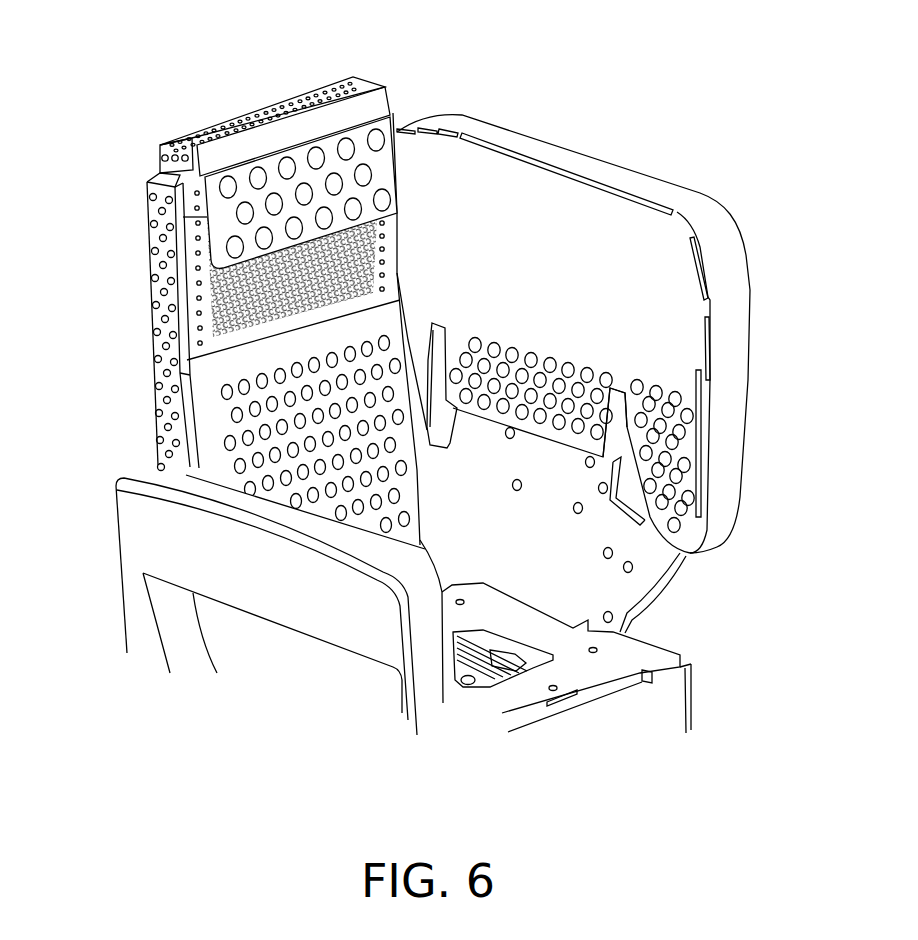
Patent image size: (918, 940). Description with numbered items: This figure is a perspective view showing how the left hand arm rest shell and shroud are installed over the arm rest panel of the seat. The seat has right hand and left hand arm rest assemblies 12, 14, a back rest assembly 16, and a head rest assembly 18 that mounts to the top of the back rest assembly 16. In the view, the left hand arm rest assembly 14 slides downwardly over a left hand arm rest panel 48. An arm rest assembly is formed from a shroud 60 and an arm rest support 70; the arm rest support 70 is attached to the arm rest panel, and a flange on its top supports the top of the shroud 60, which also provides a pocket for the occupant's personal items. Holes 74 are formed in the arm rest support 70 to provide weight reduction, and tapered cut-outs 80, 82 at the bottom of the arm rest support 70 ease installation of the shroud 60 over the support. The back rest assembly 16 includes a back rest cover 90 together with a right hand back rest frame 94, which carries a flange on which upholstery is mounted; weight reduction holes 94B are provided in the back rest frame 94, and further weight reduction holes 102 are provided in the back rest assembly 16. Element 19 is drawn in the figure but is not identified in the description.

The right hand arm rest assembly 12 is at (344, 411).
The left hand arm rest assembly 14 is at (624, 390).
The back rest assembly 16 is at (241, 329).
The head rest assembly 18 is at (335, 117).
The base plate 19 is at (687, 680).
The left hand arm rest panel 48 is at (625, 535).
The shroud 60 is at (157, 523).
The arm rest support 70 is at (626, 335).
The holes 74 is at (531, 243).
The tapered cut-out 80 is at (442, 322).
The tapered cut-out 82 is at (615, 432).
The back rest cover 90 is at (163, 180).
The right hand back rest frame 94 is at (117, 267).
The weight reduction holes 94B is at (163, 263).
The weight reduction holes 102 is at (257, 483).